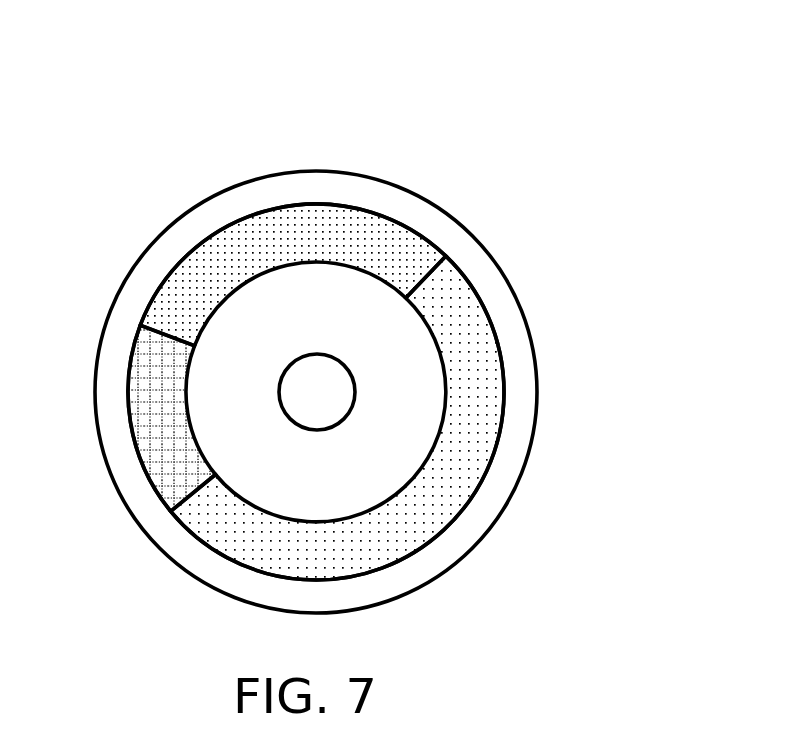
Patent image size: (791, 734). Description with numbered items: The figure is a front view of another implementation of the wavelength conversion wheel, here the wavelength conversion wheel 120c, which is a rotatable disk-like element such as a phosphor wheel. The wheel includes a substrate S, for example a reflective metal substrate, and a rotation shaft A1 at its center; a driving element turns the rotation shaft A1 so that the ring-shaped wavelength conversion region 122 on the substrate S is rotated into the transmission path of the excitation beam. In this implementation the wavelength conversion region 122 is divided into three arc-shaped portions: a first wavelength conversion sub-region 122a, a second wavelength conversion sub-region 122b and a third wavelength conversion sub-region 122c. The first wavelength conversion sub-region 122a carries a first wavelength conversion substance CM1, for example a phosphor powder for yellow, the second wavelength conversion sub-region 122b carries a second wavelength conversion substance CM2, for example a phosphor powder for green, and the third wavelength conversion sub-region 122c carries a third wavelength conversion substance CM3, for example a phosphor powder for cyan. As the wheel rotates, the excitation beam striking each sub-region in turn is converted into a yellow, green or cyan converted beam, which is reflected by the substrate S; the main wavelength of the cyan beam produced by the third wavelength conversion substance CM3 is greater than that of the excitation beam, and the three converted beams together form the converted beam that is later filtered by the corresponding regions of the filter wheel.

The wavelength conversion wheel 120c is at (361, 402).
The substrate S is at (208, 218).
The wavelength conversion region 122 is at (365, 402).
The first wavelength conversion sub-region 122a is at (244, 575).
The second wavelength conversion sub-region 122b is at (332, 200).
The third wavelength conversion sub-region 122c is at (141, 467).
The first wavelength conversion substance CM1 is at (424, 513).
The second wavelength conversion substance CM2 is at (185, 297).
The third wavelength conversion substance CM3 is at (148, 412).
The rotation shaft A1 is at (349, 393).